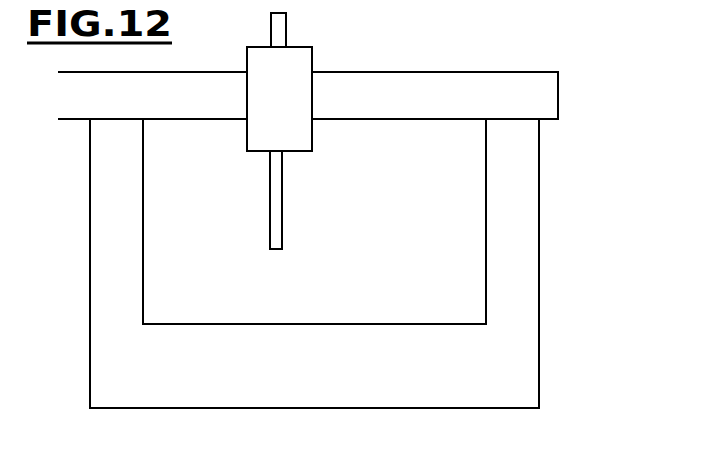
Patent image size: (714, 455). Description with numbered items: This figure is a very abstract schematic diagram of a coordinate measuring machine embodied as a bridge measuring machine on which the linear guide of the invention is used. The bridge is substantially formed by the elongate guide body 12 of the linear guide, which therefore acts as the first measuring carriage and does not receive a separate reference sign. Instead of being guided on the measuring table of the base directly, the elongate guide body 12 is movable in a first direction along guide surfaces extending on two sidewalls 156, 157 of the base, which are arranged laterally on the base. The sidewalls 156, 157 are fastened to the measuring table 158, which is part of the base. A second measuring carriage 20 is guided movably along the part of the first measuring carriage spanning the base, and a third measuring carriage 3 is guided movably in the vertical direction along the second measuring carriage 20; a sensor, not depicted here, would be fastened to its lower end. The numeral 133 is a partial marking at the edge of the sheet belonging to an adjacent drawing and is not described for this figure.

The elongate guide body 12 is at (533, 105).
The second measuring carriage 20 is at (302, 140).
The third measuring carriage 3 is at (279, 195).
The sidewall 156 is at (127, 230).
The sidewall 157 is at (523, 209).
The measuring table 158 is at (280, 355).
The partial numeral from adjacent figure 133 is at (458, 2).